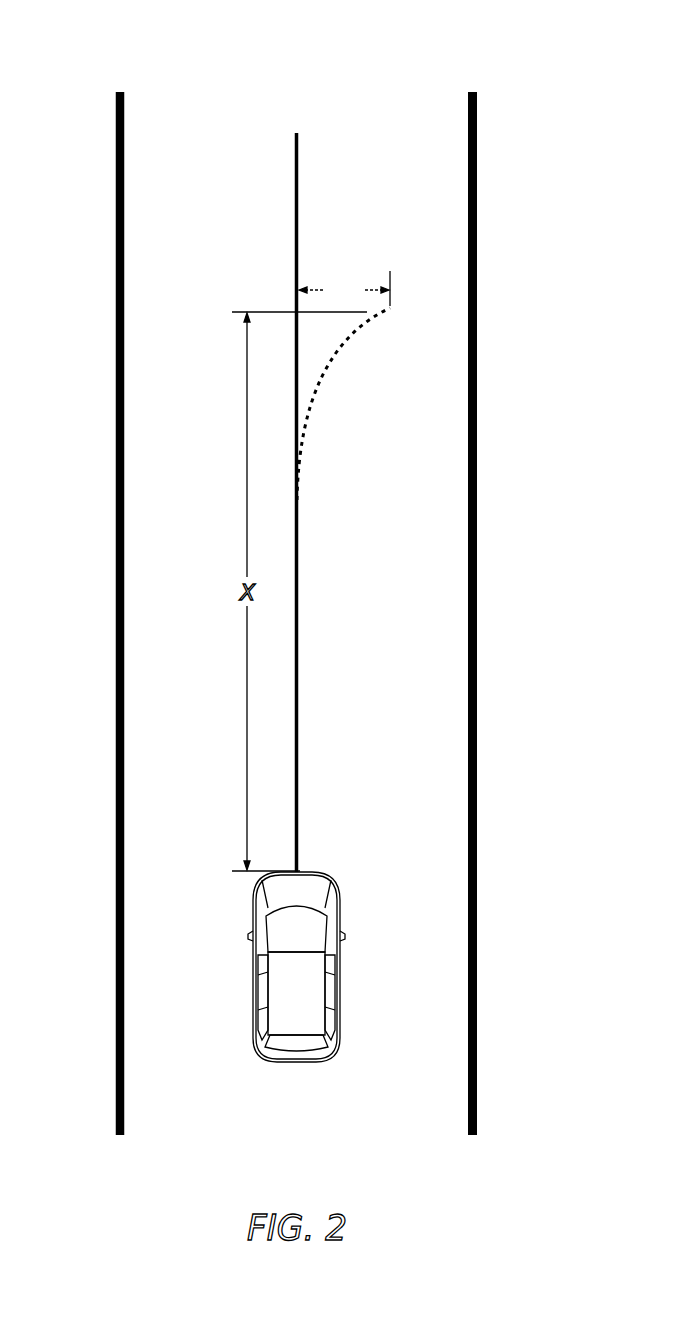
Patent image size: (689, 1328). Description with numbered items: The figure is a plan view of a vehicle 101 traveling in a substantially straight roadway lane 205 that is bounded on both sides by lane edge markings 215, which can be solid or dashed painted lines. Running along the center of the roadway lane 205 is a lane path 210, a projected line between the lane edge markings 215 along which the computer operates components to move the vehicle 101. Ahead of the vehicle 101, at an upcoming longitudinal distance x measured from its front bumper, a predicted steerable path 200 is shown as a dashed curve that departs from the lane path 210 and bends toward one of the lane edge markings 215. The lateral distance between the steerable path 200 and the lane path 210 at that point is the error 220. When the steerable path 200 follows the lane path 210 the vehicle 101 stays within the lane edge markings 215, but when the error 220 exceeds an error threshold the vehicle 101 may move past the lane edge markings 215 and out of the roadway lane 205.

The vehicle 101 is at (339, 918).
The steerable path 200 is at (333, 363).
The roadway lane 205 is at (188, 125).
The lane path 210 is at (297, 152).
The lane edge markings 215 is at (115, 627).
The error 220 is at (344, 288).